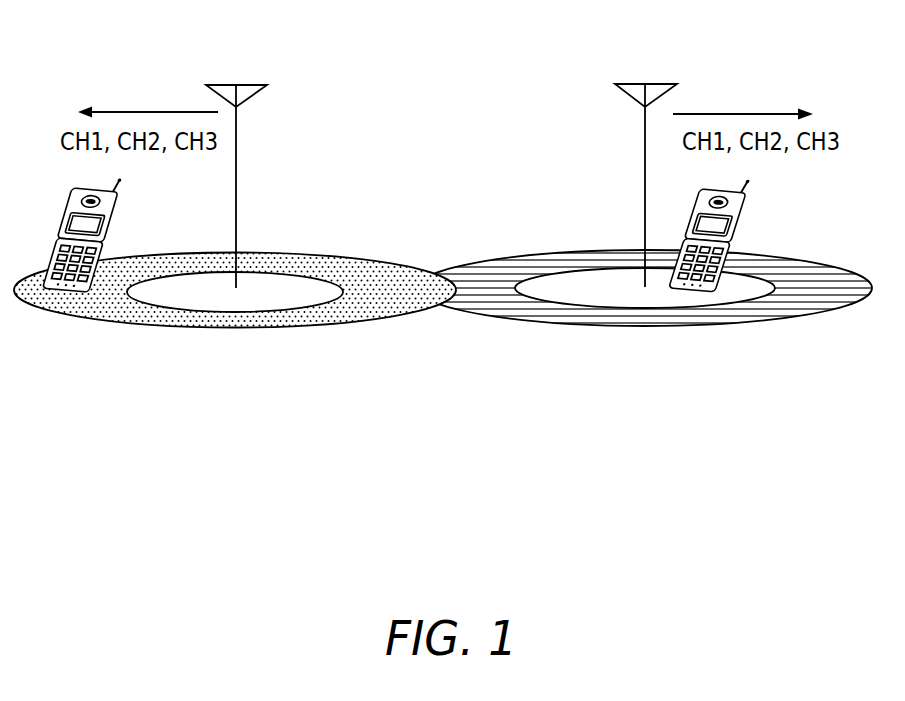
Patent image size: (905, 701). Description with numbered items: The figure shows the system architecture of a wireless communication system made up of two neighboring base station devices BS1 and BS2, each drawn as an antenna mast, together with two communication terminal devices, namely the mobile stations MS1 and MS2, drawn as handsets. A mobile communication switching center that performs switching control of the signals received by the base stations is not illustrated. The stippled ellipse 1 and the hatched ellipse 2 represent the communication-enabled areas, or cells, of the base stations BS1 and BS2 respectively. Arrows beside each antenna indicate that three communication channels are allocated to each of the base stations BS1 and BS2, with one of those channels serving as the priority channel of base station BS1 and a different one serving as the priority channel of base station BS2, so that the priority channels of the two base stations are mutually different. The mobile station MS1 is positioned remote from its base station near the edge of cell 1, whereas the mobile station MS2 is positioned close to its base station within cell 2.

The communication-enabled area (cell) 1 is at (227, 328).
The communication-enabled area (cell) 2 is at (632, 325).
The base station device BS1 is at (252, 85).
The base station device BS2 is at (659, 84).
The communication terminal device (mobile station) MS1 is at (120, 222).
The communication terminal device (mobile station) MS2 is at (748, 221).